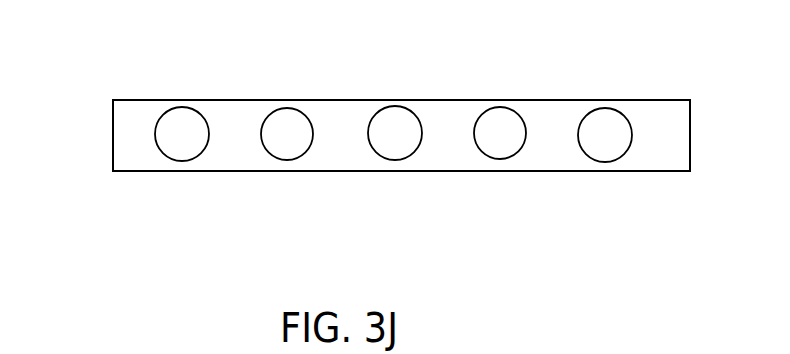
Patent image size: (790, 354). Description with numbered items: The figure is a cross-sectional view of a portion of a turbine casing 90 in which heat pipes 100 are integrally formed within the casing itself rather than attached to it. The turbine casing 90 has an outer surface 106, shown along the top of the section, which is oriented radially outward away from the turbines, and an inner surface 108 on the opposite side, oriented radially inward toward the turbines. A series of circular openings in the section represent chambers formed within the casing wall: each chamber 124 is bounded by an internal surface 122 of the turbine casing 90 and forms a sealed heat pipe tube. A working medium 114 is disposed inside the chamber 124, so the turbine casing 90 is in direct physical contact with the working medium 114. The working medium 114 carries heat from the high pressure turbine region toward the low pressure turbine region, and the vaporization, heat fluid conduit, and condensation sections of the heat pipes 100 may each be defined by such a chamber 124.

The turbine casing 90 is at (353, 147).
The heat pipes 100 is at (270, 101).
The outer surface 106 is at (122, 98).
The inner surface 108 is at (137, 172).
The working medium 114 is at (505, 135).
The internal surface 122 is at (155, 132).
The chamber 124 is at (622, 108).